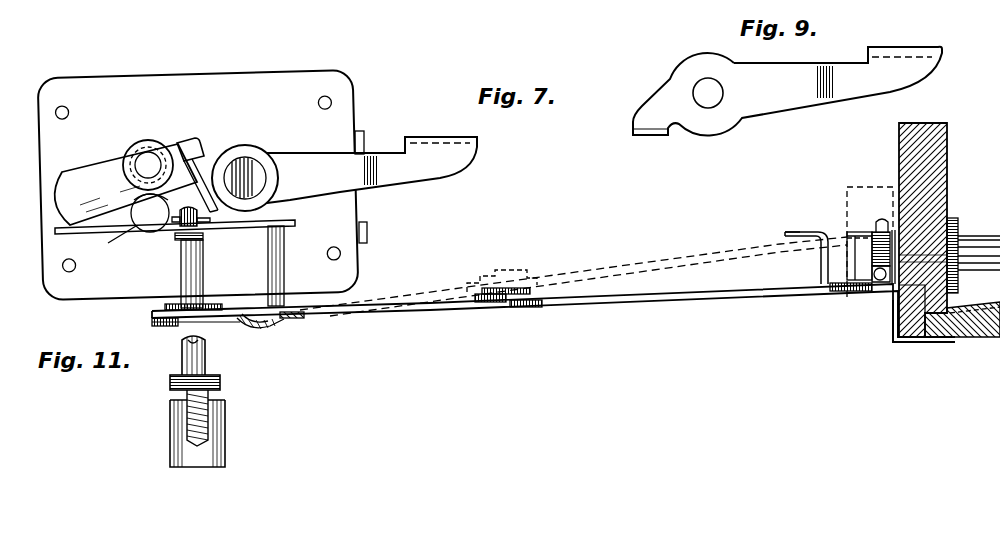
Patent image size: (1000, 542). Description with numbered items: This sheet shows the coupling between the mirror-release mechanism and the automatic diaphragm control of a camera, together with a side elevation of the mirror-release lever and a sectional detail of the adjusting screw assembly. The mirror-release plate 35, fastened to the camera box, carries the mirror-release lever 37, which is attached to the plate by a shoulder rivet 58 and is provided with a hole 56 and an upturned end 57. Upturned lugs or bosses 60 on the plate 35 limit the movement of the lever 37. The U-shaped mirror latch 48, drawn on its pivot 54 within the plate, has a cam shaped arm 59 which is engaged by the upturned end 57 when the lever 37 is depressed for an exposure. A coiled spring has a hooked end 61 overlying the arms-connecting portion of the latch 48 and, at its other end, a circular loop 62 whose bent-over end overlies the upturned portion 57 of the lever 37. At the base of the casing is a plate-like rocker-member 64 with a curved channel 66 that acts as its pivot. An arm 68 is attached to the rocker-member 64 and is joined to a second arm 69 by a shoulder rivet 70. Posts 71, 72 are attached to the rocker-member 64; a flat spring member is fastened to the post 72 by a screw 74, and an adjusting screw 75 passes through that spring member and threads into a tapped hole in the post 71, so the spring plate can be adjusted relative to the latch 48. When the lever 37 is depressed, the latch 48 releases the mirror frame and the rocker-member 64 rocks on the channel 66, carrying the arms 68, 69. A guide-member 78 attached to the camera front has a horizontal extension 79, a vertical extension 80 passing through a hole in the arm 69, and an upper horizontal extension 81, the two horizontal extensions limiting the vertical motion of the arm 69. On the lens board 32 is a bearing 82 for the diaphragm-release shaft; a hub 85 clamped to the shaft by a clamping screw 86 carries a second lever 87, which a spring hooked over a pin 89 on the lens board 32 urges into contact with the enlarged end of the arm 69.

In FIG. 7, the lens board 32 is at (944, 160).
In FIG. 7, the mirror-release plate 35 is at (351, 97).
In FIG. 7, the mirror-release lever 37 is at (443, 166).
In FIG. 9, the mirror-release lever 37 is at (910, 74).
In FIG. 7, the mirror latch 48 is at (208, 168).
In FIG. 7, the pivot boss 54 is at (149, 152).
In FIG. 9, the hole 56 is at (708, 109).
In FIG. 7, the upturned end 57 is at (177, 225).
In FIG. 9, the upturned end 57 is at (655, 135).
In FIG. 7, the shoulder rivet 58 is at (262, 165).
In FIG. 7, the cam shaped arm 59 is at (131, 226).
In FIG. 7, the upturned lugs or bosses 60 is at (367, 232).
In FIG. 7, the hooked end 61 is at (193, 141).
In FIG. 7, the circular loop 62 is at (160, 230).
In FIG. 7, the rocker-member 64 is at (302, 318).
In FIG. 7, the curved channel 66 is at (265, 319).
In FIG. 7, the arm 68 is at (448, 311).
In FIG. 7, the second arm 69 is at (616, 300).
In FIG. 7, the shoulder rivet 70 is at (531, 293).
In FIG. 7, the post 71 is at (203, 273).
In FIG. 11, the post 71 is at (219, 421).
In FIG. 7, the post 72 is at (284, 260).
In FIG. 7, the screw 74 is at (278, 222).
In FIG. 7, the adjusting screw 75 is at (203, 236).
In FIG. 11, the adjusting screw 75 is at (206, 356).
In FIG. 7, the guide-member 78 is at (895, 334).
In FIG. 7, the horizontal extension 79 is at (856, 296).
In FIG. 7, the vertical extension 80 is at (820, 261).
In FIG. 7, the upper horizontal extension 81 is at (791, 231).
In FIG. 7, the bearing 82 is at (979, 234).
In FIG. 7, the hub 85 is at (870, 253).
In FIG. 7, the clamping screw 86 is at (878, 222).
In FIG. 7, the second lever 87 is at (840, 291).
In FIG. 7, the pin 89 is at (880, 283).